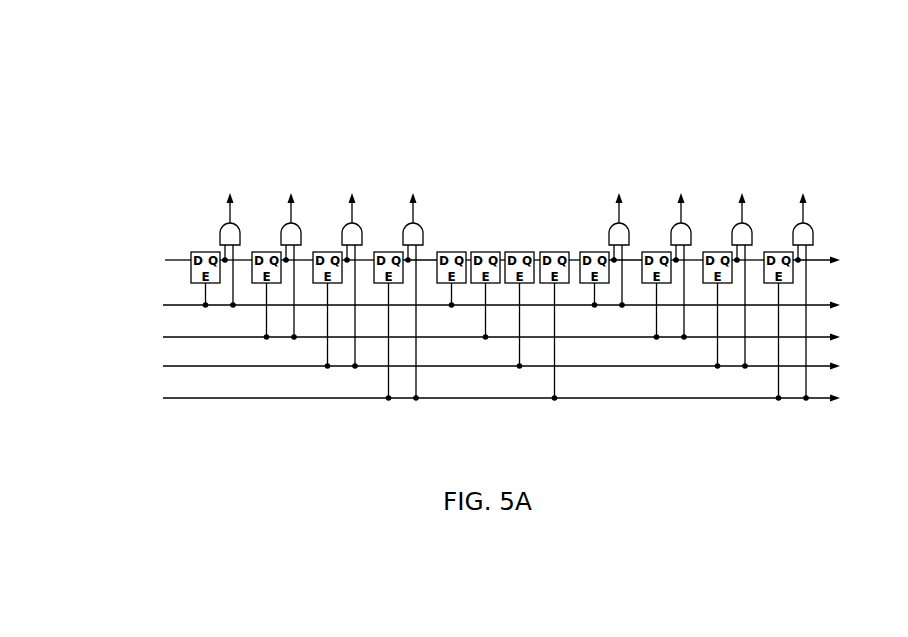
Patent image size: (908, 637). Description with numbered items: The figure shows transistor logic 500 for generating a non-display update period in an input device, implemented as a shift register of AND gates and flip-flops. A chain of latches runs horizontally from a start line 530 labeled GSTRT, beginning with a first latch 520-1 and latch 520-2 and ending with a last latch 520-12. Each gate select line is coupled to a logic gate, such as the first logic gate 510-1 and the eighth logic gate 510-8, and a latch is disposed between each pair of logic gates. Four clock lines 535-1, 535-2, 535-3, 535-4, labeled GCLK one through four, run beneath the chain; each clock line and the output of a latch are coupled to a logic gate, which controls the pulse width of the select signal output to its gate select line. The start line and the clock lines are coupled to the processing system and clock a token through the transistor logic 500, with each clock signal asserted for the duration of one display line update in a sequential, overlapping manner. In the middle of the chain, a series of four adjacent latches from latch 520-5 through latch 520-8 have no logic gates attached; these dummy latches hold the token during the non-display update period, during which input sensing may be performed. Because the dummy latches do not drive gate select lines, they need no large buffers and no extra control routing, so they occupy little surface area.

The transistor logic 500 is at (150, 122).
The logic gate 510-1 is at (222, 230).
The logic gate 510-8 is at (810, 230).
The latch 520-1 is at (200, 252).
The latch 520-2 is at (258, 252).
The latch 520-5 is at (455, 252).
The latch 520-8 is at (548, 252).
The latch 520-12 is at (793, 272).
The start line 530 is at (108, 259).
The clock line 535-1 is at (108, 303).
The clock line 535-2 is at (108, 335).
The clock line 535-3 is at (108, 366).
The clock line 535-4 is at (108, 398).